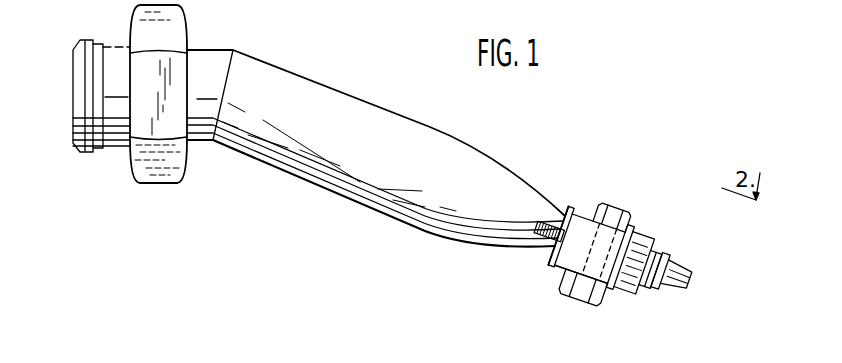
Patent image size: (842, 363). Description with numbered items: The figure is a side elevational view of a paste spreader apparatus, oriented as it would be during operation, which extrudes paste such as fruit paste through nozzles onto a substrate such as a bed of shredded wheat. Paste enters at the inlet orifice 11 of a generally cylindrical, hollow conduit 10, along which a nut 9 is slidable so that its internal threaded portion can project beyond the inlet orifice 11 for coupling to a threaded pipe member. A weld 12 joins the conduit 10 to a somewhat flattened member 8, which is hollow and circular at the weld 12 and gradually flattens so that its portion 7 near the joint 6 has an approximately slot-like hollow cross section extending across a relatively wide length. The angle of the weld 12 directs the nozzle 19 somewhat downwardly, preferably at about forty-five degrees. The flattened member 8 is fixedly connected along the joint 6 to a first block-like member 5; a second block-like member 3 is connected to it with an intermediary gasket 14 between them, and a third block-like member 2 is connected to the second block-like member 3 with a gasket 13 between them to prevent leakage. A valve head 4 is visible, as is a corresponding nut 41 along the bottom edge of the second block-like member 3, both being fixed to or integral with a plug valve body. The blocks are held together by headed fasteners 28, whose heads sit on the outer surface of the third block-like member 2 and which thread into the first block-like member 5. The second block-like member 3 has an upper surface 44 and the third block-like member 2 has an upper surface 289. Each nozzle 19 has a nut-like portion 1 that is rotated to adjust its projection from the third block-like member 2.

The nut-like portion 1 is at (678, 297).
The third block-like member 2 is at (652, 247).
The second block-like member 3 is at (592, 222).
The valve head 4 is at (620, 208).
The first block-like member 5 is at (573, 222).
The joint 6 is at (563, 217).
The portion of the member 7 is at (512, 227).
The flattened member 8 is at (322, 157).
The nut 9 is at (167, 173).
The conduit 10 is at (122, 122).
The inlet orifice 11 is at (73, 78).
The weld 12 is at (233, 50).
The gasket 13 is at (620, 293).
The gasket 14 is at (562, 268).
The nozzle 19 is at (694, 283).
The headed fastener 28 is at (537, 220).
The nut 41 is at (597, 302).
The upper surface 44 is at (627, 223).
The upper surface 289 is at (653, 238).